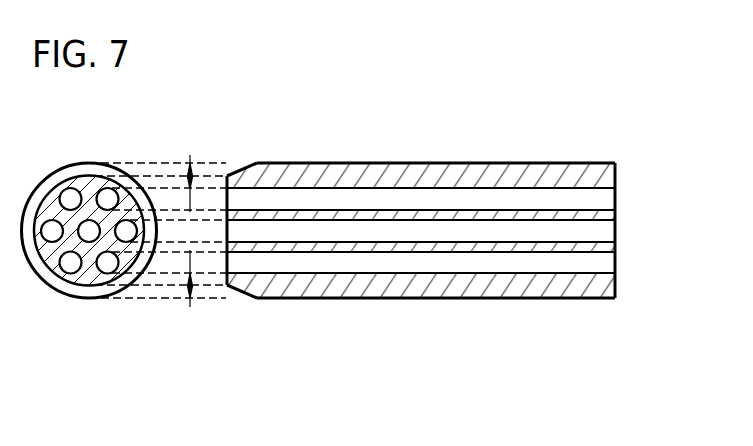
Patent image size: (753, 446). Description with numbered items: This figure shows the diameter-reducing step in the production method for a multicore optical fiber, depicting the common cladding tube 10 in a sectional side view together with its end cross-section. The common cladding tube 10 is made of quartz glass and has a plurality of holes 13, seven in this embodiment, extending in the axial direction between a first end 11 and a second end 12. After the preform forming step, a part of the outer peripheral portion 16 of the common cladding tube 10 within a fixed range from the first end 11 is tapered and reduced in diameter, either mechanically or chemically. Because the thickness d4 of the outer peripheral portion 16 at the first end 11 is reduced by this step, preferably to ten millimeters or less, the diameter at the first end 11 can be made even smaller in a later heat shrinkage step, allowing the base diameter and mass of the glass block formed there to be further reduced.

The common cladding tube 10 is at (455, 162).
The first end 11 is at (227, 176).
The second end 12 is at (617, 163).
The holes 13 is at (610, 267).
The outer peripheral portion 16 is at (241, 170).
The thickness d4 is at (188, 183).